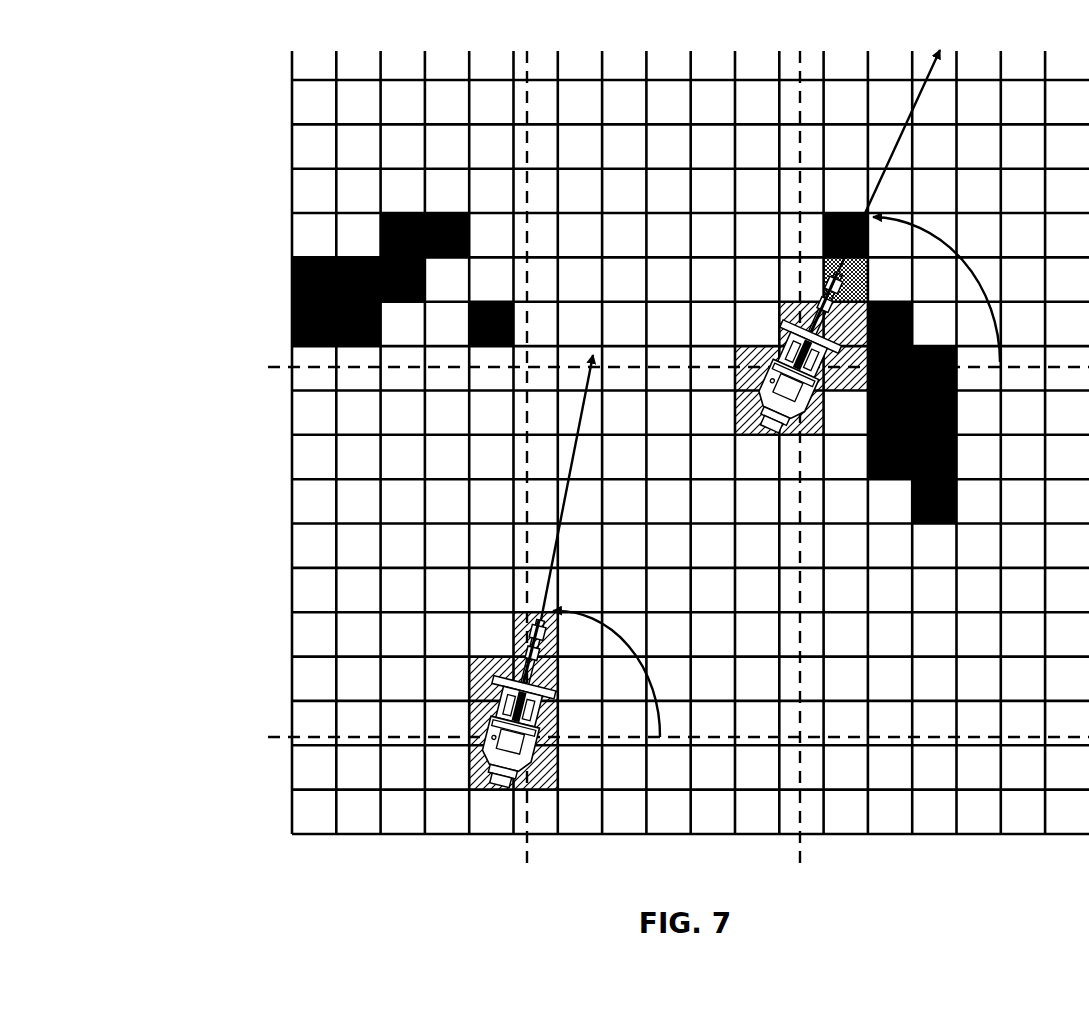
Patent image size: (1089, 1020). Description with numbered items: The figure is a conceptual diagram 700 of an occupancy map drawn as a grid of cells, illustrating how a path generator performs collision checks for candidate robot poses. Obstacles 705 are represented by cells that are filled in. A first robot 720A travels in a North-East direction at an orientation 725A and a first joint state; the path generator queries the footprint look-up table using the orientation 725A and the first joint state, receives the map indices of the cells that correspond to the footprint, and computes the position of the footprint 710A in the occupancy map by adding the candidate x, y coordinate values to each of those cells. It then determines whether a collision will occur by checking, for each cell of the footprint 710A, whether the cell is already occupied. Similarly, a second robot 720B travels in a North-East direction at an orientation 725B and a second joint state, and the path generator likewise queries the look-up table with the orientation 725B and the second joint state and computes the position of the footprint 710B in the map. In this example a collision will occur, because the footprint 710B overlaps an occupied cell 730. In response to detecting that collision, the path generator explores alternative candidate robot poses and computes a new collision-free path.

The occupancy grid map 700 is at (686, 37).
The obstacles 705 is at (291, 287).
The occupied cell 730 is at (823, 278).
The footprint 710A is at (472, 776).
The first robot 720A is at (548, 776).
The footprint 710B is at (740, 405).
The second robot 720B is at (805, 407).
The orientation 725A is at (644, 674).
The orientation 725B is at (957, 268).